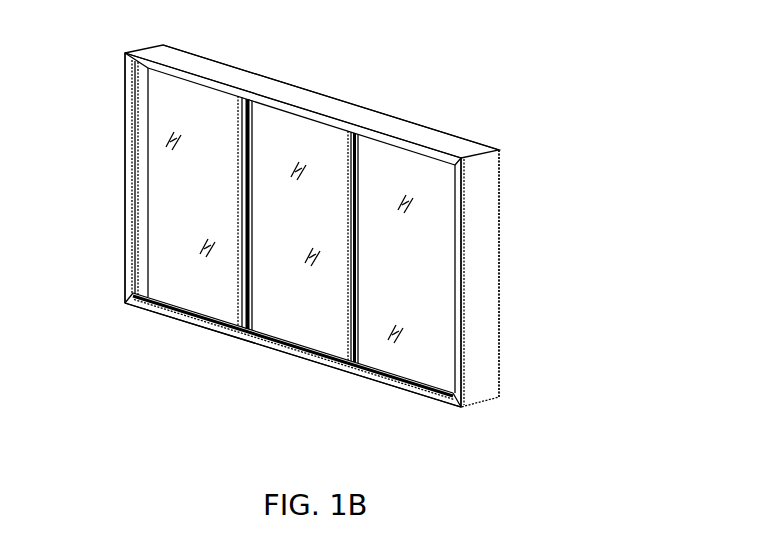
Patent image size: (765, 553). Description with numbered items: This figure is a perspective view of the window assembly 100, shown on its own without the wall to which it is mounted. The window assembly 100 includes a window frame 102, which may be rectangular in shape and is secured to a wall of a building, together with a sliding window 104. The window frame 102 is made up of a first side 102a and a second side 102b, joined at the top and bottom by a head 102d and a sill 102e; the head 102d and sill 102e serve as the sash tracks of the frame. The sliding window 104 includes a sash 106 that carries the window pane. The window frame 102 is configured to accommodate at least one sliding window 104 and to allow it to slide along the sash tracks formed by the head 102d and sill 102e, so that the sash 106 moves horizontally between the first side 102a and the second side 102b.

The window assembly 100 is at (543, 100).
The window frame 102 is at (500, 172).
The first side 102a is at (127, 163).
The second side 102b is at (490, 290).
The head 102d is at (185, 60).
The sill 102e is at (352, 370).
The sliding window 104 is at (182, 300).
The sash 106 is at (235, 308).